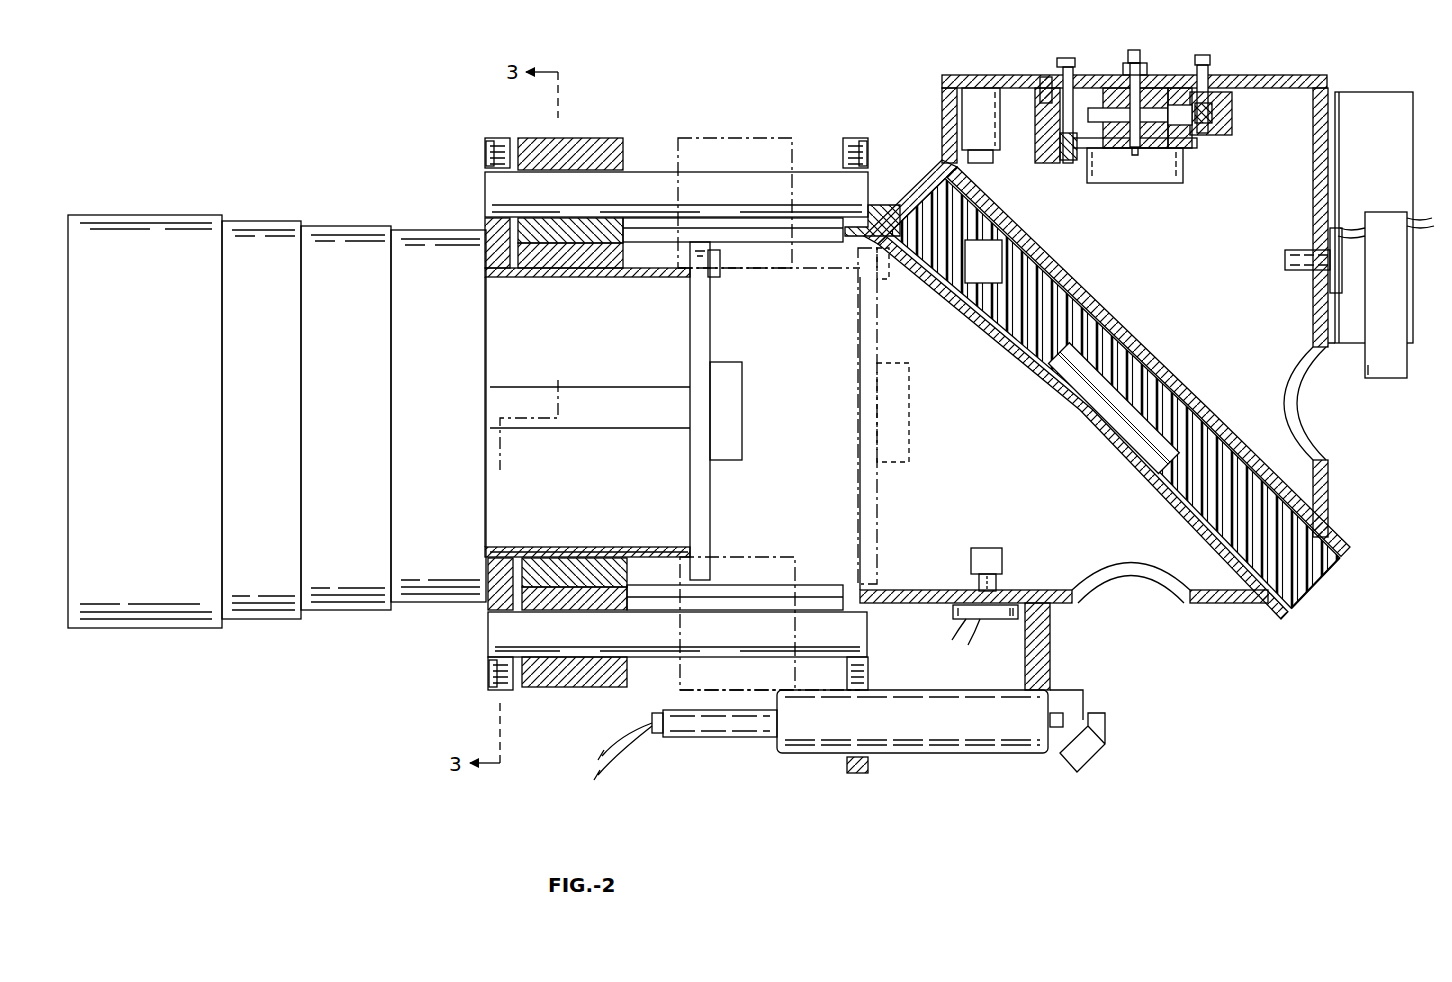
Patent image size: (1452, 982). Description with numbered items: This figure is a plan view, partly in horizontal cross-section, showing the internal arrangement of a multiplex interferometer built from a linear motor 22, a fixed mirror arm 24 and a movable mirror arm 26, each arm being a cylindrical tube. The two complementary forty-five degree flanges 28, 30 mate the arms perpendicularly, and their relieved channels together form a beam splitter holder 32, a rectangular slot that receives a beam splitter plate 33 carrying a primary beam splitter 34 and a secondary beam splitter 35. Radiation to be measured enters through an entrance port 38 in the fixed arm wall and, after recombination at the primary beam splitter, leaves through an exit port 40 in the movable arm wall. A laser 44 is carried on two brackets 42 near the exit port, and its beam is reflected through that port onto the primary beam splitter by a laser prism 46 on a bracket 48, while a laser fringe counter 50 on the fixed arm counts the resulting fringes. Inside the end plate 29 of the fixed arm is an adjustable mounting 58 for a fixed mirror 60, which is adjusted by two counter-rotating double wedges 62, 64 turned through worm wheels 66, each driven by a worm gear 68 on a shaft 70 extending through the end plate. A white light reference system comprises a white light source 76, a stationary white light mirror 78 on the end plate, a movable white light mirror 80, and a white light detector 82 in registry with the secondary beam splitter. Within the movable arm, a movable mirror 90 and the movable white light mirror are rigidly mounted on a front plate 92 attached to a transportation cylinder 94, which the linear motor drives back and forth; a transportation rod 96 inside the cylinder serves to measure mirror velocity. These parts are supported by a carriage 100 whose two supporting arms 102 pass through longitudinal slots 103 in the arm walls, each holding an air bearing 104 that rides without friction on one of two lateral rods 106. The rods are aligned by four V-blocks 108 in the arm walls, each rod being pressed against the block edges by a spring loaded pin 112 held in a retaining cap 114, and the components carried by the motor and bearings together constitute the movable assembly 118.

The linear motor 22 is at (168, 449).
The fixed mirror arm 24 is at (1181, 254).
The movable mirror arm 26 is at (993, 491).
The 45° flange 28 is at (1281, 618).
The end plate 29 is at (1270, 76).
The 45° flange 30 is at (1350, 546).
The beam splitter holder 32 is at (1300, 612).
The beam splitter plate 33 is at (1205, 462).
The primary beam splitter 34 is at (1135, 410).
The secondary beam splitter 35 is at (975, 270).
The entrance port 38 is at (1296, 420).
The exit port 40 is at (1135, 570).
The brackets 42 is at (1047, 645).
The laser 44 is at (972, 750).
The laser prism 46 is at (1102, 734).
The bracket 48 is at (1358, 96).
The laser fringe counter 50 is at (1386, 380).
The adjustable mounting 58 is at (1208, 141).
The fixed mirror 60 is at (1145, 185).
The double wedge 62 is at (1128, 95).
The double wedge 64 is at (1096, 108).
The worm wheels 66 is at (1185, 105).
The worm gear 68 is at (1068, 162).
The shaft 70 is at (1060, 60).
The white light source 76 is at (972, 560).
The stationary white light mirror 78 is at (985, 163).
The movable white light mirror 80 is at (718, 270).
The white light detector 82 is at (1292, 268).
The movable mirror 90 is at (745, 438).
The front plate 92 is at (705, 340).
The transportation cylinder 94 is at (680, 550).
The transportation rod 96 is at (605, 432).
The carriage 100 is at (586, 254).
The supporting arms 102 is at (575, 250).
The longitudinal slots 103 is at (783, 234).
The air bearing 104 is at (612, 160).
The lateral rods 106 is at (733, 182).
The V-blocks 108 is at (487, 216).
The spring loaded pin 112 is at (497, 140).
The retaining cap 114 is at (488, 150).
The movable assembly 118 is at (757, 395).